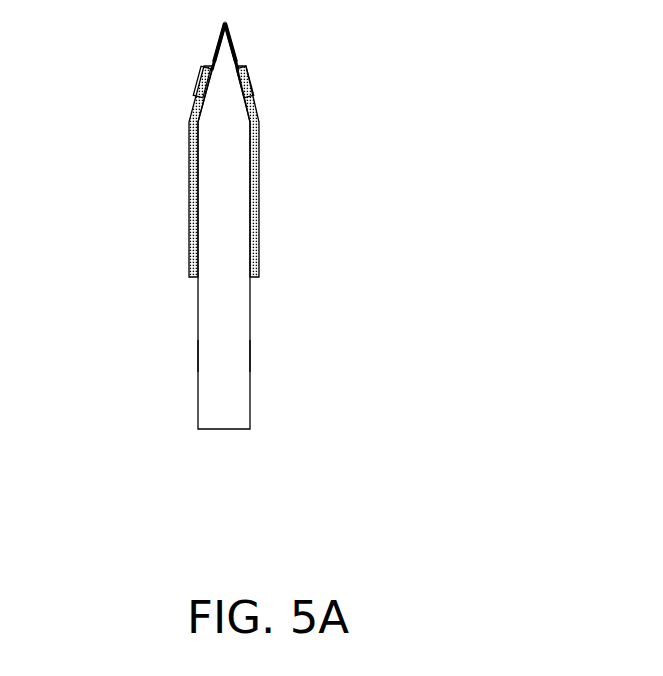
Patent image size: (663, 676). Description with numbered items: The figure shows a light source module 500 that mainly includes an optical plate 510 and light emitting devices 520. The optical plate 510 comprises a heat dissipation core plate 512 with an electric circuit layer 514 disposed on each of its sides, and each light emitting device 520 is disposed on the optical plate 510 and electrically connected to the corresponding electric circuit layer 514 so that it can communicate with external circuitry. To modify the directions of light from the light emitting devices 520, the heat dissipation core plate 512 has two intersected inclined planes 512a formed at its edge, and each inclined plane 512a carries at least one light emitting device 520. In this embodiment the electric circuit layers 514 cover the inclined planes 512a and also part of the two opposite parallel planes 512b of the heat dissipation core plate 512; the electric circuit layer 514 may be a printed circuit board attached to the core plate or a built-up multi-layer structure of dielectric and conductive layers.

The light source module 500 is at (195, 243).
The optical plate 510 is at (195, 214).
The heat dissipation core plate 512 is at (212, 312).
The inclined plane 512a is at (214, 41).
The opposite parallel plane 512b is at (197, 356).
The electric circuit layer 514 is at (219, 171).
The light emitting device 520 is at (196, 80).